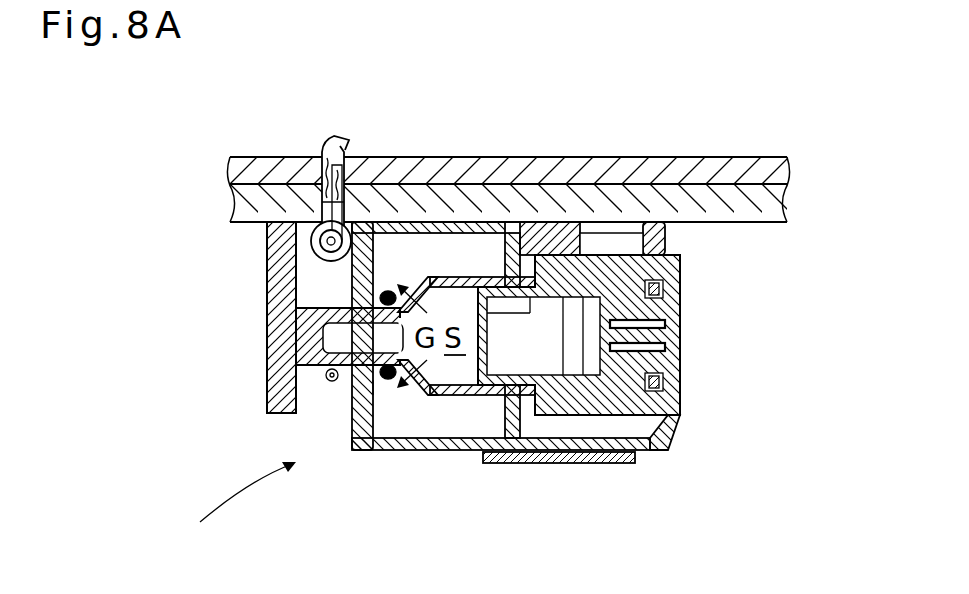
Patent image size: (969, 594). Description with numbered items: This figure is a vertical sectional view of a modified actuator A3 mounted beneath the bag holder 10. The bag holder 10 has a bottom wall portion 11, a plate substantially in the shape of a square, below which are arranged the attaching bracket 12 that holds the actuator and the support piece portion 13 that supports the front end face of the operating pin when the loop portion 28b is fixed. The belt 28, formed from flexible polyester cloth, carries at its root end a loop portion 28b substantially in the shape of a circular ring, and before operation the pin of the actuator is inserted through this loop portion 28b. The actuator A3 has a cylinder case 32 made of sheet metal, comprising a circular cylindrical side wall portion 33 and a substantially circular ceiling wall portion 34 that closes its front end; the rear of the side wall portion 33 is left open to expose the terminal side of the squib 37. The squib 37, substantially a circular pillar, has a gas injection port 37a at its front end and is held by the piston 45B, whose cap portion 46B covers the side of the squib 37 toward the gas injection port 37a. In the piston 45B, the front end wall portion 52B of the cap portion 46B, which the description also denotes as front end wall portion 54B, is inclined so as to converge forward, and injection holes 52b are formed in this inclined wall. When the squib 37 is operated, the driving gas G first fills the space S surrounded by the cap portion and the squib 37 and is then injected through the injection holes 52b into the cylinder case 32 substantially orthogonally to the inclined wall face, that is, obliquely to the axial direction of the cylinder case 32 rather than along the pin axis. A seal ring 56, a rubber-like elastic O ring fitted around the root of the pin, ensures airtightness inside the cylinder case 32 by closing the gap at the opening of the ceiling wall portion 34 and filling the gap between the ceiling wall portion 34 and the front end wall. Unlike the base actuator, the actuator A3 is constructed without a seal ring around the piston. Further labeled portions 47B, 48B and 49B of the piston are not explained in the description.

The bag holder 10 is at (567, 154).
The bottom wall portion 11 is at (733, 168).
The attaching bracket 12 is at (590, 464).
The support piece portion 13 is at (297, 312).
The belt 28 is at (324, 148).
The loop portion 28b is at (331, 382).
The cylinder case 32 is at (430, 336).
The side wall portion 33 is at (640, 452).
The ceiling wall portion 34 is at (357, 278).
The squib 37 is at (662, 266).
The gas injection port 37a is at (492, 337).
The piston 45B is at (503, 233).
The cap portion 46B is at (582, 237).
The upper clearance 47B is at (470, 266).
The lower wall 48B is at (538, 452).
The lower clearance 49B is at (470, 455).
The front end wall portion 52B is at (425, 282).
The injection holes 52b is at (400, 397).
The front end wall portion 54B is at (300, 340).
The seal ring 56 is at (372, 387).
The actuator A3 is at (230, 509).